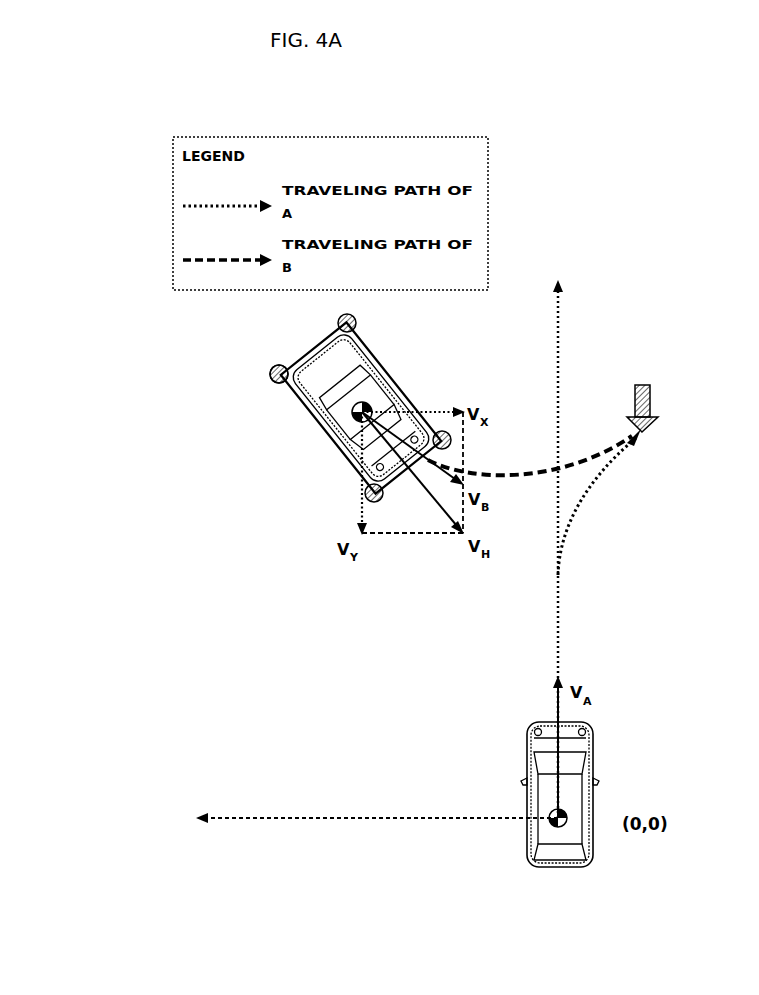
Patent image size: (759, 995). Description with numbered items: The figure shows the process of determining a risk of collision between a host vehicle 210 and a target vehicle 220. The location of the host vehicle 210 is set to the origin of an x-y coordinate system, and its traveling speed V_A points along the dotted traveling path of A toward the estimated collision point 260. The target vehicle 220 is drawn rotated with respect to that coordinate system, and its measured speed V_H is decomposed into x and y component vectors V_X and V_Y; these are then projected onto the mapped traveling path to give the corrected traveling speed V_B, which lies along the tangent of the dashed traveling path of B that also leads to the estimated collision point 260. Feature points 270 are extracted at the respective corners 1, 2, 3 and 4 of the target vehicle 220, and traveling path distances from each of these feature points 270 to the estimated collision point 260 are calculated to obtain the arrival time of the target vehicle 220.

The host vehicle 210 is at (598, 787).
The target vehicle 220 is at (348, 380).
The estimated collision point 260 is at (651, 395).
The feature points 270 is at (271, 379).
The corner 1 is at (374, 504).
The corner 2 is at (275, 386).
The corner 3 is at (355, 327).
The corner 4 is at (448, 441).